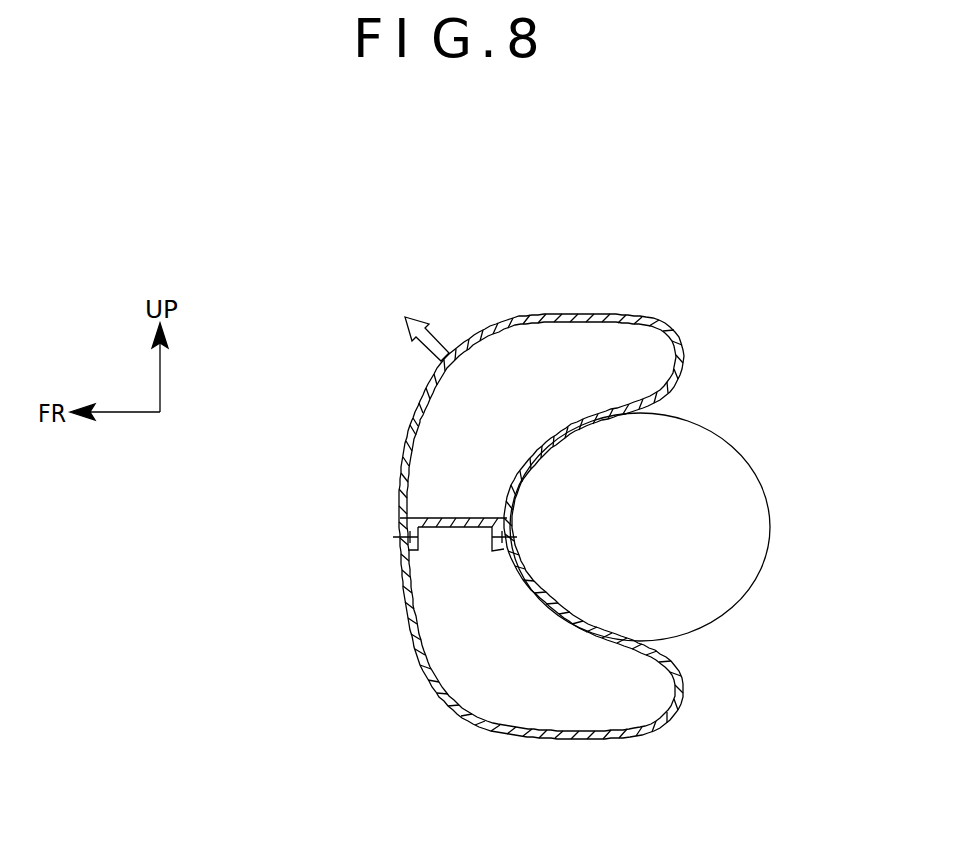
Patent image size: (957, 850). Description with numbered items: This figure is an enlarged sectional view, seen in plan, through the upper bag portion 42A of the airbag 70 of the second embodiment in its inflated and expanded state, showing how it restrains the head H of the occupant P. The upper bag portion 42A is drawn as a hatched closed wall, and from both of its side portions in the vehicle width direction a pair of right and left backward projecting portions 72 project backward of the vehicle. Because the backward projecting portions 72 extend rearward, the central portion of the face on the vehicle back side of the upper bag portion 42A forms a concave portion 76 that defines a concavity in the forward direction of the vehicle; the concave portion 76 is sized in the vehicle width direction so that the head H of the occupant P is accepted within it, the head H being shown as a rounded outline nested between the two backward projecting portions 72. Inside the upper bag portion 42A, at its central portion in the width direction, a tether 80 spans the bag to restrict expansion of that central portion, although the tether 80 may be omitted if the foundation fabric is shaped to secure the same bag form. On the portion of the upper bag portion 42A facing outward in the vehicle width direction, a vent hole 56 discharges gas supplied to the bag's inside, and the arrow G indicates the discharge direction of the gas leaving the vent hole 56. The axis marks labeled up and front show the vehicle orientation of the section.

The upper bag portion 42A is at (469, 527).
The airbag 70 is at (541, 526).
The backward projecting portions 72 is at (641, 313).
The concave portion 76 is at (548, 588).
The tether 80 is at (462, 516).
The vent hole 56 is at (432, 373).
The arrow G is at (436, 333).
The head H is at (681, 527).
The occupant P is at (737, 449).